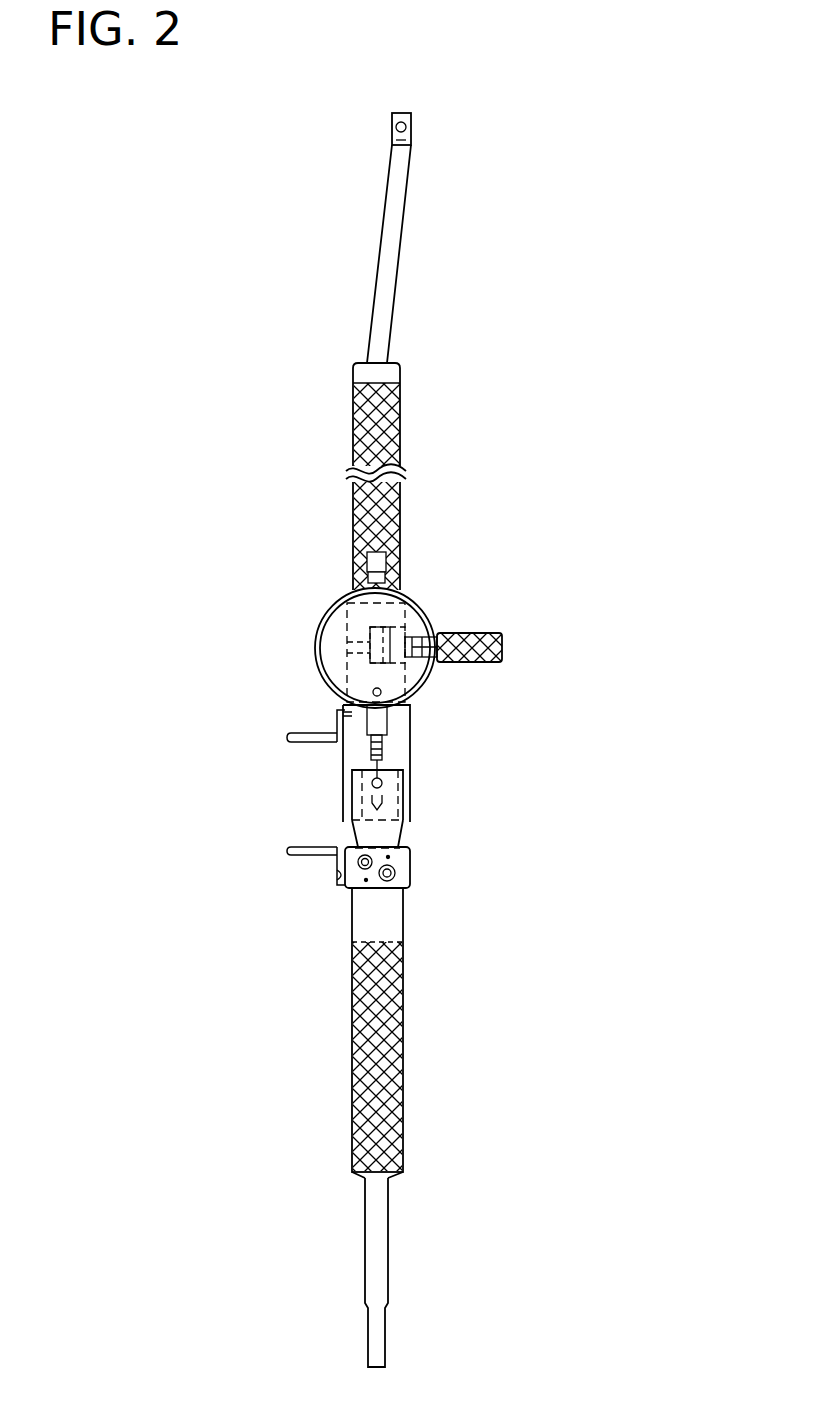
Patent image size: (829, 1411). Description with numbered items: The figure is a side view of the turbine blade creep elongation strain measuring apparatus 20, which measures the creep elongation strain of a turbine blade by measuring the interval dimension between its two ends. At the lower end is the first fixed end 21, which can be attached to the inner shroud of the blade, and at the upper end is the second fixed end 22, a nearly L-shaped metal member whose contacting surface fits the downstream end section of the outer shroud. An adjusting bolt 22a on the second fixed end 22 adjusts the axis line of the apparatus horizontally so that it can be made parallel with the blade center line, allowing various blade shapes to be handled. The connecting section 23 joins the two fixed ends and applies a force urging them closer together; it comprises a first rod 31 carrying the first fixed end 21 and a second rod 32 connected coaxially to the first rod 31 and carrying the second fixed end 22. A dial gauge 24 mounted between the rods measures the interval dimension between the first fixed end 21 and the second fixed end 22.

The turbine blade creep elongation strain measuring apparatus 20 is at (418, 529).
The first fixed end 21 is at (385, 1337).
The second fixed end 22 is at (411, 127).
The adjusting bolt 22a is at (396, 127).
The connecting section 23 is at (403, 1042).
The dial gauge 24 is at (332, 632).
The first rod 31 is at (352, 1003).
The second rod 32 is at (353, 423).